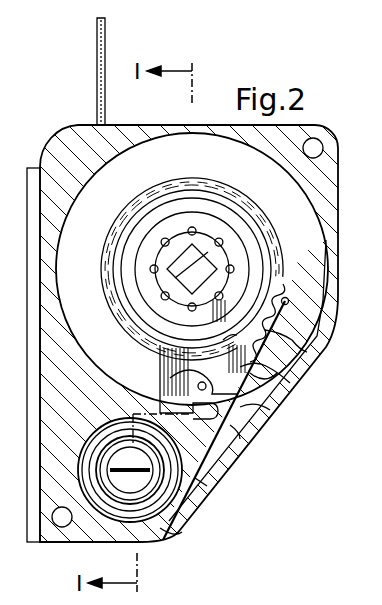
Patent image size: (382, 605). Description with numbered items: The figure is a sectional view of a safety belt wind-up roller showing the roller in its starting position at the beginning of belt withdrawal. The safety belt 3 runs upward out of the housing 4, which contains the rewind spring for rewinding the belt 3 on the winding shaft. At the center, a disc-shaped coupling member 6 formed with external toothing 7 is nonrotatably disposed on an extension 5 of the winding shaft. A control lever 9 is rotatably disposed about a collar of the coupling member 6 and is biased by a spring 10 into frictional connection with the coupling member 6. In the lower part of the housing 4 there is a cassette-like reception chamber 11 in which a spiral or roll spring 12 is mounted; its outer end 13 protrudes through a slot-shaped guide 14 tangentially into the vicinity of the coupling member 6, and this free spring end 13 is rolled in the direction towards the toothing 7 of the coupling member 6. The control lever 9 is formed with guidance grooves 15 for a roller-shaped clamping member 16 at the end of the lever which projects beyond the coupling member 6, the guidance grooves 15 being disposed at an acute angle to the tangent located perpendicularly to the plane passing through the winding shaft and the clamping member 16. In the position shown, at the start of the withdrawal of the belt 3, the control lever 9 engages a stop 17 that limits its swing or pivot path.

The safety belt 3 is at (107, 40).
The housing 4 is at (73, 143).
The extension of the winding shaft 5 is at (177, 263).
The coupling member 6 is at (116, 288).
The external toothing 7 is at (283, 286).
The control lever 9 is at (157, 352).
The spring 10 is at (236, 243).
The reception chamber 11 is at (182, 532).
The spiral spring 12 is at (207, 486).
The outer end of the spiral spring 13 is at (307, 352).
The slot-shaped guide 14 is at (240, 439).
The guidance grooves 15 is at (172, 381).
The clamping member 16 is at (258, 414).
The stop 17 is at (280, 386).